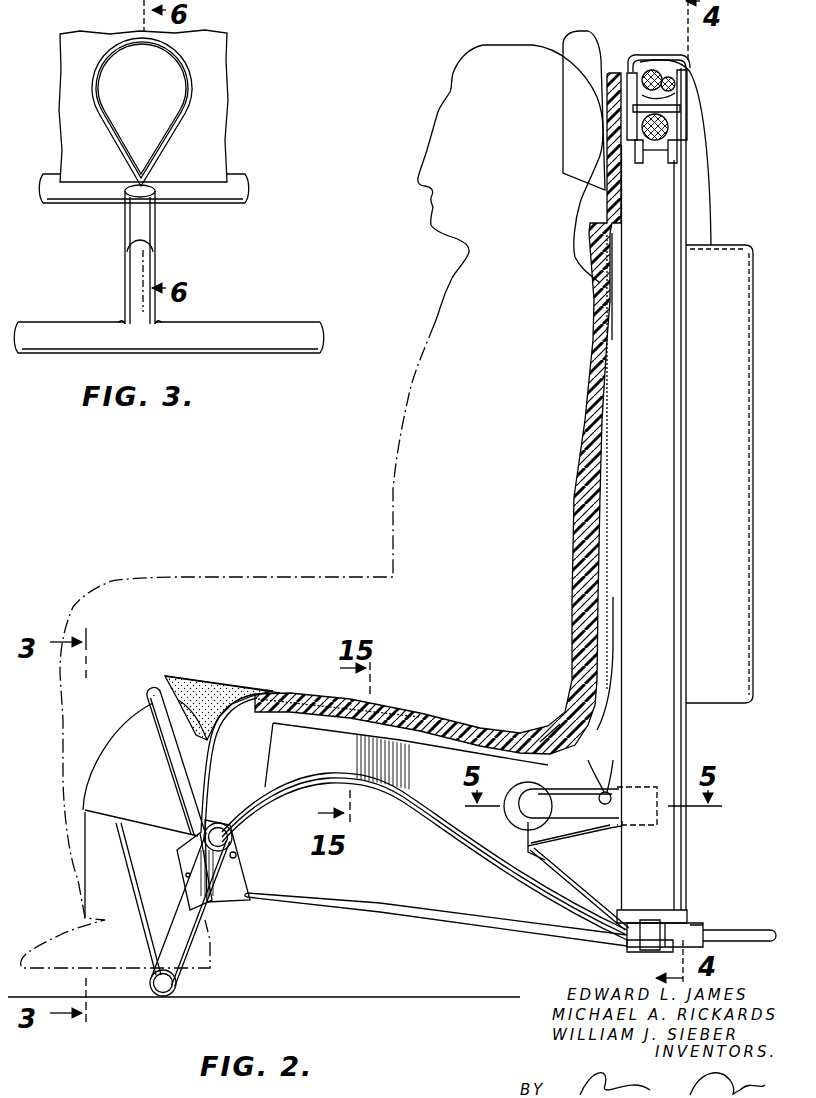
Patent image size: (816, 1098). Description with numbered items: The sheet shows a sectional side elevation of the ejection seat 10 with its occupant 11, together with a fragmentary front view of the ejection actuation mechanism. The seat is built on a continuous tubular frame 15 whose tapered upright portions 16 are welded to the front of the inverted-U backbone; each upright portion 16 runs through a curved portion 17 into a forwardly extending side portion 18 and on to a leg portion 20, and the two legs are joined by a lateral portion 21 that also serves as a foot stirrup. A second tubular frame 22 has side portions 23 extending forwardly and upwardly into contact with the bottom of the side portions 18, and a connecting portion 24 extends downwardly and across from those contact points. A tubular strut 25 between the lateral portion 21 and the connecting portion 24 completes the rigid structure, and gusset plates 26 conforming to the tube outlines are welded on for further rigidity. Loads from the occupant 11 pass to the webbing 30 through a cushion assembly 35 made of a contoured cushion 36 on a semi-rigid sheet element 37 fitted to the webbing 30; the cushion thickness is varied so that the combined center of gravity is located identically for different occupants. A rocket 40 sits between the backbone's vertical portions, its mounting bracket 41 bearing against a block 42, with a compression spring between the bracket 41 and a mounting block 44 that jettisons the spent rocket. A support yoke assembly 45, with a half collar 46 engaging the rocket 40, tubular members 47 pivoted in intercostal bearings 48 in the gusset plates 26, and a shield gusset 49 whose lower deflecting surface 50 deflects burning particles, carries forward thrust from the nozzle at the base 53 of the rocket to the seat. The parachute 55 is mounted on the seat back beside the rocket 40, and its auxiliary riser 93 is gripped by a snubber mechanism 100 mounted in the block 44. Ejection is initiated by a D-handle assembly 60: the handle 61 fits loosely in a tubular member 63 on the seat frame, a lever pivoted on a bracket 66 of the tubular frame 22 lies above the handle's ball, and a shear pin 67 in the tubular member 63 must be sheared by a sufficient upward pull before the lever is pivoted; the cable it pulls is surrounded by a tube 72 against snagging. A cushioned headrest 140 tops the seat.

In FIG. 2, the seat 10 is at (90, 810).
In FIG. 2, the occupant 11 is at (393, 484).
In FIG. 2, the continuous tubular frame 15 is at (110, 879).
In FIG. 2, the upright portions 16 is at (612, 503).
In FIG. 2, the curved portion 17 is at (566, 727).
In FIG. 2, the side portion 18 is at (260, 715).
In FIG. 2, the leg portion 20 is at (105, 849).
In FIG. 3, the lateral portion 21 is at (225, 333).
In FIG. 2, the lateral portion 21 is at (178, 989).
In FIG. 2, the second tubular frame 22 is at (455, 833).
In FIG. 2, the side portions 23 is at (424, 861).
In FIG. 3, the connecting portion 24 is at (225, 181).
In FIG. 2, the connecting portion 24 is at (216, 823).
In FIG. 3, the tubular strut 25 is at (130, 288).
In FIG. 2, the tubular strut 25 is at (190, 934).
In FIG. 2, the gusset plates 26 is at (347, 758).
In FIG. 2, the webbing 30 is at (200, 778).
In FIG. 2, the cushion assembly 35 is at (421, 705).
In FIG. 2, the cushion 36 is at (292, 712).
In FIG. 2, the semi-rigid sheet element 37 is at (459, 727).
In FIG. 2, the rocket 40 is at (676, 598).
In FIG. 2, the mounting bracket 41 is at (676, 155).
In FIG. 2, the block 42 is at (674, 115).
In FIG. 2, the mounting block 44 is at (685, 86).
In FIG. 2, the support yoke assembly 45 is at (521, 843).
In FIG. 2, the half collar 46 is at (620, 800).
In FIG. 2, the tubular members 47 is at (583, 800).
In FIG. 2, the intercostal bearings 48 is at (528, 788).
In FIG. 2, the shield gusset 49 is at (570, 834).
In FIG. 2, the lower deflecting surface 50 is at (552, 854).
In FIG. 2, the base of the rocket 53 is at (627, 949).
In FIG. 2, the parachute 55 is at (730, 252).
In FIG. 3, the D-handle assembly 60 is at (162, 112).
In FIG. 2, the D-handle assembly 60 is at (184, 745).
In FIG. 3, the handle 61 is at (108, 63).
In FIG. 2, the handle 61 is at (148, 687).
In FIG. 3, the tubular member 63 is at (152, 222).
In FIG. 2, the tubular member 63 is at (186, 862).
In FIG. 2, the bracket 66 is at (238, 871).
In FIG. 2, the shear pin 67 is at (186, 877).
In FIG. 2, the tube 72 is at (357, 906).
In FIG. 2, the auxiliary riser 93 is at (708, 193).
In FIG. 2, the snubber mechanism 100 is at (640, 54).
In FIG. 2, the cushioned headrest 140 is at (574, 44).